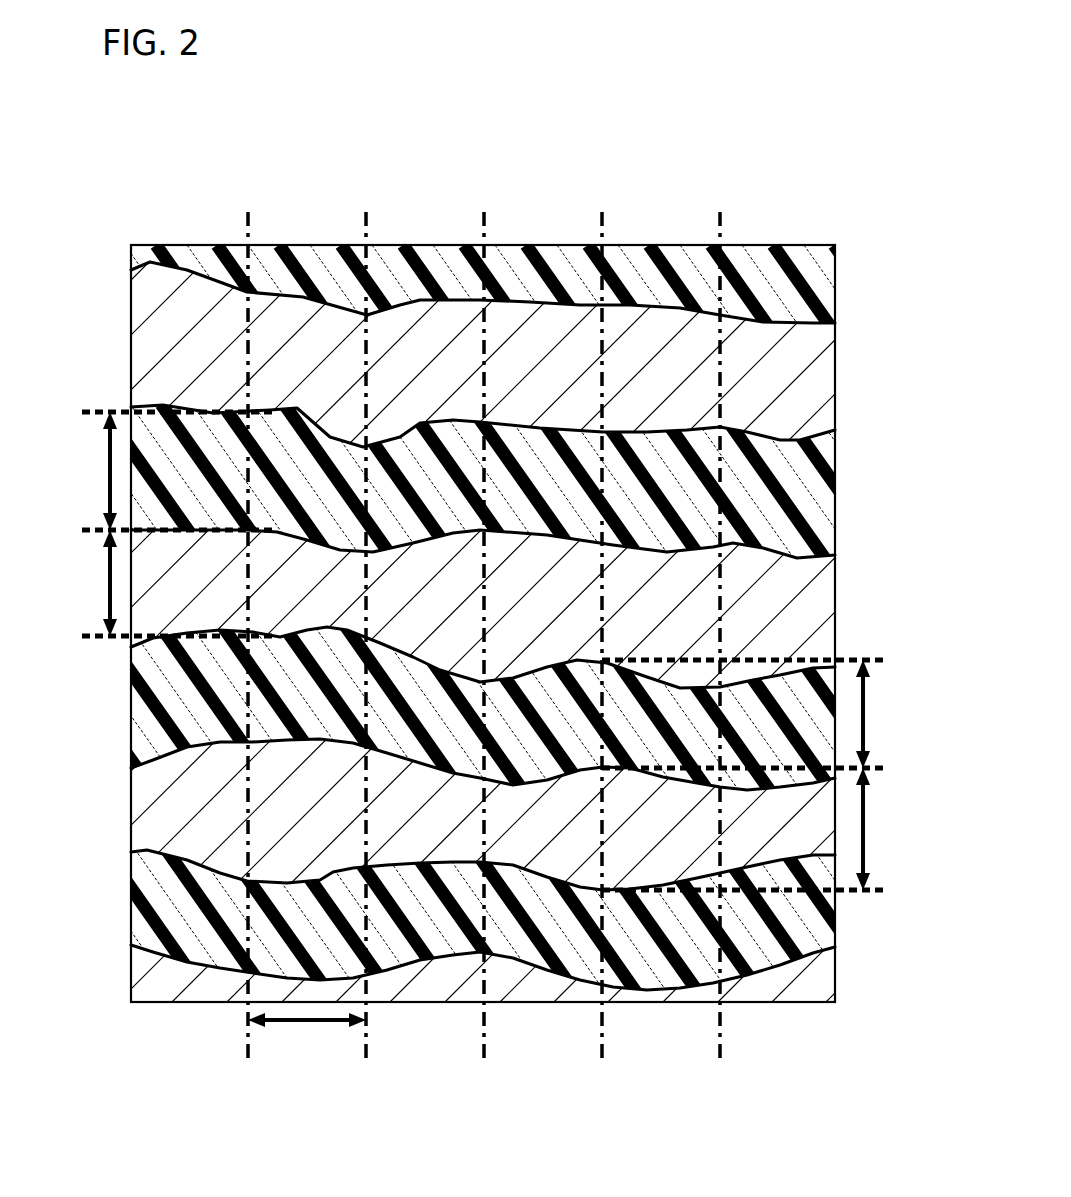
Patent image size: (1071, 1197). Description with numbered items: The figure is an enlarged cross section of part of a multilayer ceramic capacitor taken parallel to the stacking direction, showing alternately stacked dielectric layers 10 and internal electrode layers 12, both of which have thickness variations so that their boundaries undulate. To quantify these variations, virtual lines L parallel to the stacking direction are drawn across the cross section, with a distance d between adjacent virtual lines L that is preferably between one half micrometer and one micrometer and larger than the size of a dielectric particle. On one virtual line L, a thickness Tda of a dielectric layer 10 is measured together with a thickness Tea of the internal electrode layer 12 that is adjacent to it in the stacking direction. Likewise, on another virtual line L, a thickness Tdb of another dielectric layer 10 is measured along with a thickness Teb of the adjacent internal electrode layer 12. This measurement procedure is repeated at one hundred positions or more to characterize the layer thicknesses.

The dielectric layer 10 is at (830, 275).
The internal electrode layer 12 is at (828, 383).
The virtual line L is at (486, 608).
The distance between adjacent virtual lines d is at (307, 1041).
The thickness of a dielectric layer Tda is at (154, 471).
The thickness of an internal electrode layer Tea is at (154, 583).
The thickness of other dielectric layer Tdb is at (770, 714).
The thickness of other internal electrode layer Teb is at (770, 829).